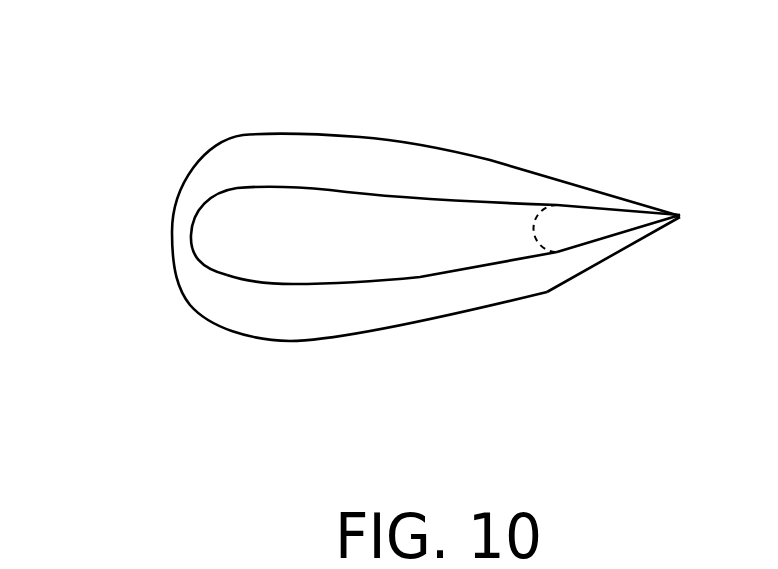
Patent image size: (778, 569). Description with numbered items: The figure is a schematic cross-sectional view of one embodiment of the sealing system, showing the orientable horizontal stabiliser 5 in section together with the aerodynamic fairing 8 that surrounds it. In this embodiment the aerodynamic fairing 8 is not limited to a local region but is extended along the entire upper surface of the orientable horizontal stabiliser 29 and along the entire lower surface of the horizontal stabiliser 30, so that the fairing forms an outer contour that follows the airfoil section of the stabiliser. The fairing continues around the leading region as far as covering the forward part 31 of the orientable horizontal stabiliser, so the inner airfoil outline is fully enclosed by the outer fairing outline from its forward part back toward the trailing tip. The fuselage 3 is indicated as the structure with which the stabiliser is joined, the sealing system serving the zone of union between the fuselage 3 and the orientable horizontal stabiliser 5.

The fuselage 3 is at (627, 390).
The orientable horizontal stabiliser 5 is at (470, 228).
The aerodynamic fairing 8 is at (257, 308).
The upper surface of the orientable horizontal stabiliser 29 is at (325, 188).
The lower surface of the horizontal stabiliser 30 is at (388, 280).
The forward part of the orientable horizontal stabiliser 31 is at (189, 235).